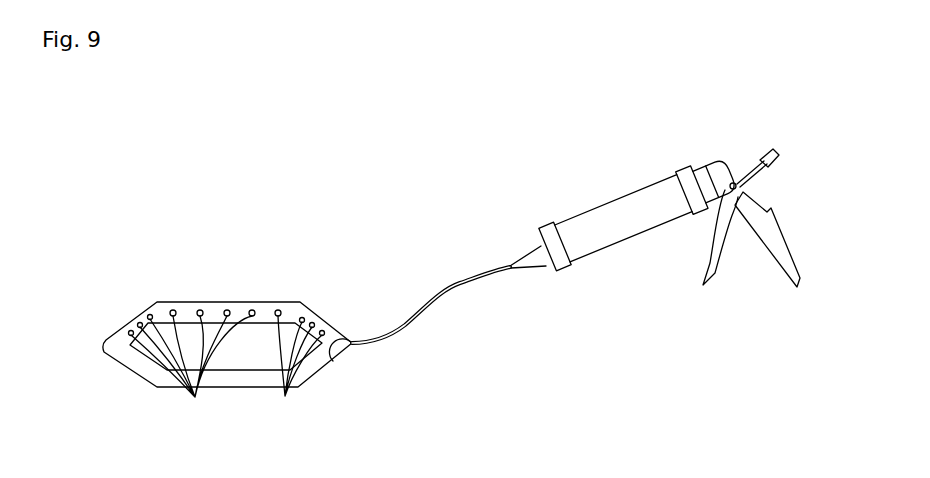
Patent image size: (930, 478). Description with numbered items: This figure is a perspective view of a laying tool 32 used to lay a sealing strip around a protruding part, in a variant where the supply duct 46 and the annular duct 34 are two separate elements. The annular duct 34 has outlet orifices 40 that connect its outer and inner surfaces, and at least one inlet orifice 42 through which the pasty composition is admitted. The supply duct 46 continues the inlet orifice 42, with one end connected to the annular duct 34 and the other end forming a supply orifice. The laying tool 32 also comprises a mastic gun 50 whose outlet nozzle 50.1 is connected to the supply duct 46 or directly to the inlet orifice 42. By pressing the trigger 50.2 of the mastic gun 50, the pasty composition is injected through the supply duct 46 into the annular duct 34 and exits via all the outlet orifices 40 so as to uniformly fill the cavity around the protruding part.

The laying tool 32 is at (157, 236).
The annular duct 34 is at (236, 292).
The outlet orifices 40 is at (226, 374).
The inlet orifice 42 is at (333, 358).
The supply duct 46 is at (460, 303).
The mastic gun 50 is at (622, 190).
The outlet nozzle 50.1 is at (518, 252).
The trigger 50.2 is at (723, 265).